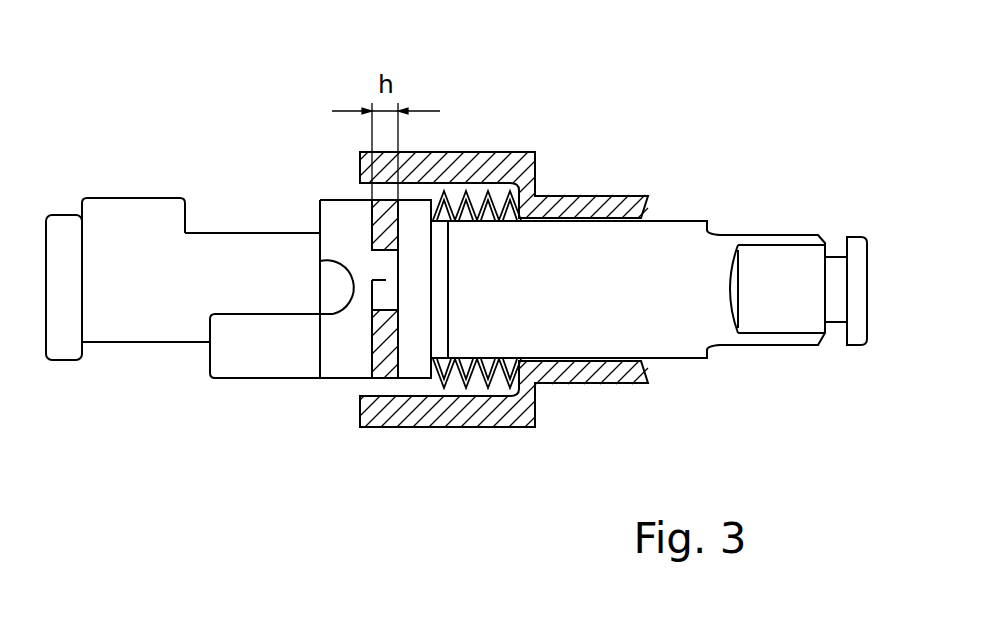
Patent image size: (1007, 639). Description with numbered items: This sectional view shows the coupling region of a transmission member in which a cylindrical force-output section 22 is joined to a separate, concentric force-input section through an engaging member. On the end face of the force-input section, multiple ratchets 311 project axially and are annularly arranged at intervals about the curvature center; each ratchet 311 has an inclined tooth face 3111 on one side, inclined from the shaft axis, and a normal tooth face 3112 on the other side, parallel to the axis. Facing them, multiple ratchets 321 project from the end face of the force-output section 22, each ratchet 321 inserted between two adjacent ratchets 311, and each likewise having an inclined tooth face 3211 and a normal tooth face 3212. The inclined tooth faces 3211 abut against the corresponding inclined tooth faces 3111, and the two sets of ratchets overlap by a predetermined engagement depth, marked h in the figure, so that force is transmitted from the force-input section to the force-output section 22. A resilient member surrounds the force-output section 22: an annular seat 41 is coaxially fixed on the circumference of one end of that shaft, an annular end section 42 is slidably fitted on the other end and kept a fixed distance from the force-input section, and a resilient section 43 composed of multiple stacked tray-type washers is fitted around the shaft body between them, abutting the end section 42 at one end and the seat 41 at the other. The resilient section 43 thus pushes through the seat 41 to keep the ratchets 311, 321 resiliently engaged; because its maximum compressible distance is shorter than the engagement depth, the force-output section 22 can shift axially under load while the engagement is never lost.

The force-output section 22 is at (613, 258).
The ratchet 311 is at (438, 199).
The inclined tooth face 3111 is at (303, 160).
The normal tooth face 3112 is at (349, 132).
The ratchet 321 is at (348, 383).
The inclined tooth face 3211 is at (311, 445).
The normal tooth face 3212 is at (403, 463).
The annular seat 41 is at (471, 373).
The annular end section 42 is at (511, 155).
The resilient section 43 is at (492, 394).